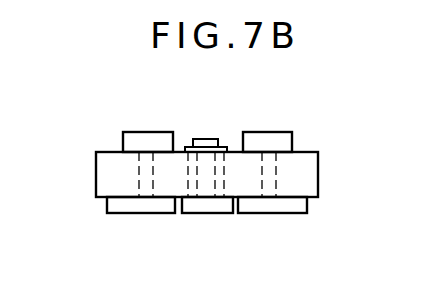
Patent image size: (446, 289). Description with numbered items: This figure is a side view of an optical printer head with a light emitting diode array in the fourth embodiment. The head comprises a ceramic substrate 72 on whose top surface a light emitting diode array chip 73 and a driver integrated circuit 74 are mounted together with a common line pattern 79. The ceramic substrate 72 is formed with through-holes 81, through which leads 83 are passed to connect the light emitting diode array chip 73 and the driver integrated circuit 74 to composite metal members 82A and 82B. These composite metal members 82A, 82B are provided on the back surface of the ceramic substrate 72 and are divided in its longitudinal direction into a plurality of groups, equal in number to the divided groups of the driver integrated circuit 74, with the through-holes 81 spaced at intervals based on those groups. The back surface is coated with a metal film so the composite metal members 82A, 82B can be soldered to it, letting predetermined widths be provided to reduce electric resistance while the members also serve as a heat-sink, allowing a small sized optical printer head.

The ceramic substrate 72 is at (316, 198).
The light emitting diode array chip 73 is at (217, 139).
The driver integrated circuit 74 is at (130, 132).
The common line pattern 79 is at (187, 147).
The through-holes 81 is at (143, 153).
The composite metal member 82A is at (213, 213).
The composite metal member 82B is at (158, 213).
The leads 83 is at (146, 183).